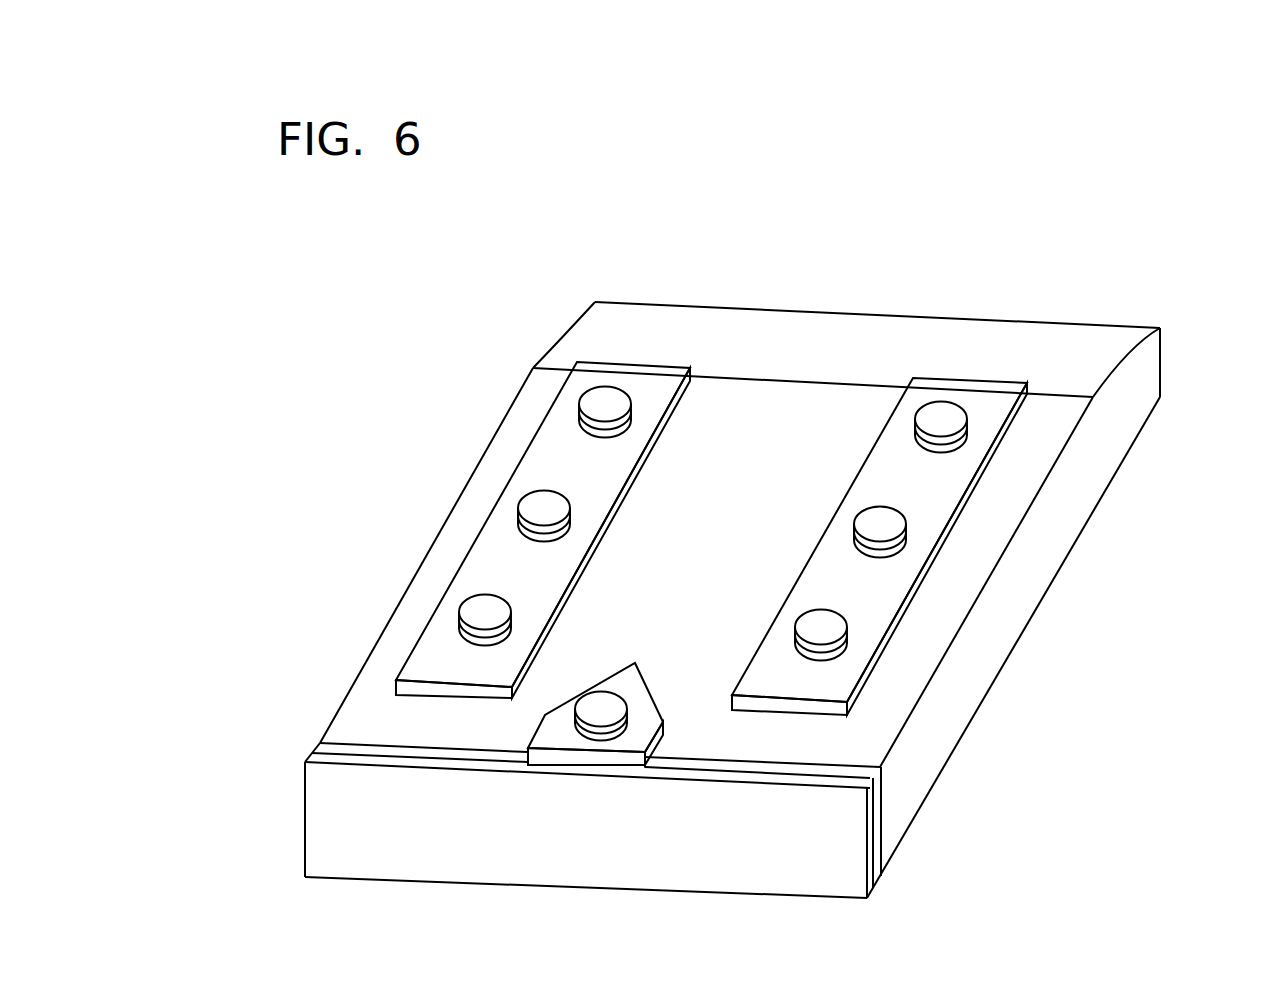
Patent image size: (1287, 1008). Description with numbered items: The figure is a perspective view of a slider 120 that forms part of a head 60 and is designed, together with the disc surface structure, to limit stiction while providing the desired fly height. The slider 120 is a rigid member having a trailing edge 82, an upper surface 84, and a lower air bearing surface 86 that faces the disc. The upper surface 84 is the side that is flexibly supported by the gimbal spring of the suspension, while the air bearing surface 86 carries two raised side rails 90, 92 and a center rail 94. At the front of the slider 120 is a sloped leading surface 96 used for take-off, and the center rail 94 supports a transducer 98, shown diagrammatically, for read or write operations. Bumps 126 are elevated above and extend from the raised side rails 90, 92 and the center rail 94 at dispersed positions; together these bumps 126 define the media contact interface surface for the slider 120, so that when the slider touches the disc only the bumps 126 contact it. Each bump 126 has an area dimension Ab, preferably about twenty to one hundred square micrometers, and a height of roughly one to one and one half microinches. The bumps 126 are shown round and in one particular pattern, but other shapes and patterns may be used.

The head 60 is at (1010, 168).
The trailing edge 82 is at (668, 760).
The upper surface 84 is at (1003, 667).
The lower air bearing surface 86 is at (950, 408).
The raised side rail 90 is at (563, 545).
The raised side rail 92 is at (830, 522).
The center rail 94 is at (620, 680).
The sloped leading surface 96 is at (890, 369).
The transducer 98 is at (560, 772).
The slider 120 is at (830, 313).
The bumps 126 is at (607, 405).
The area dimension Ab is at (452, 615).